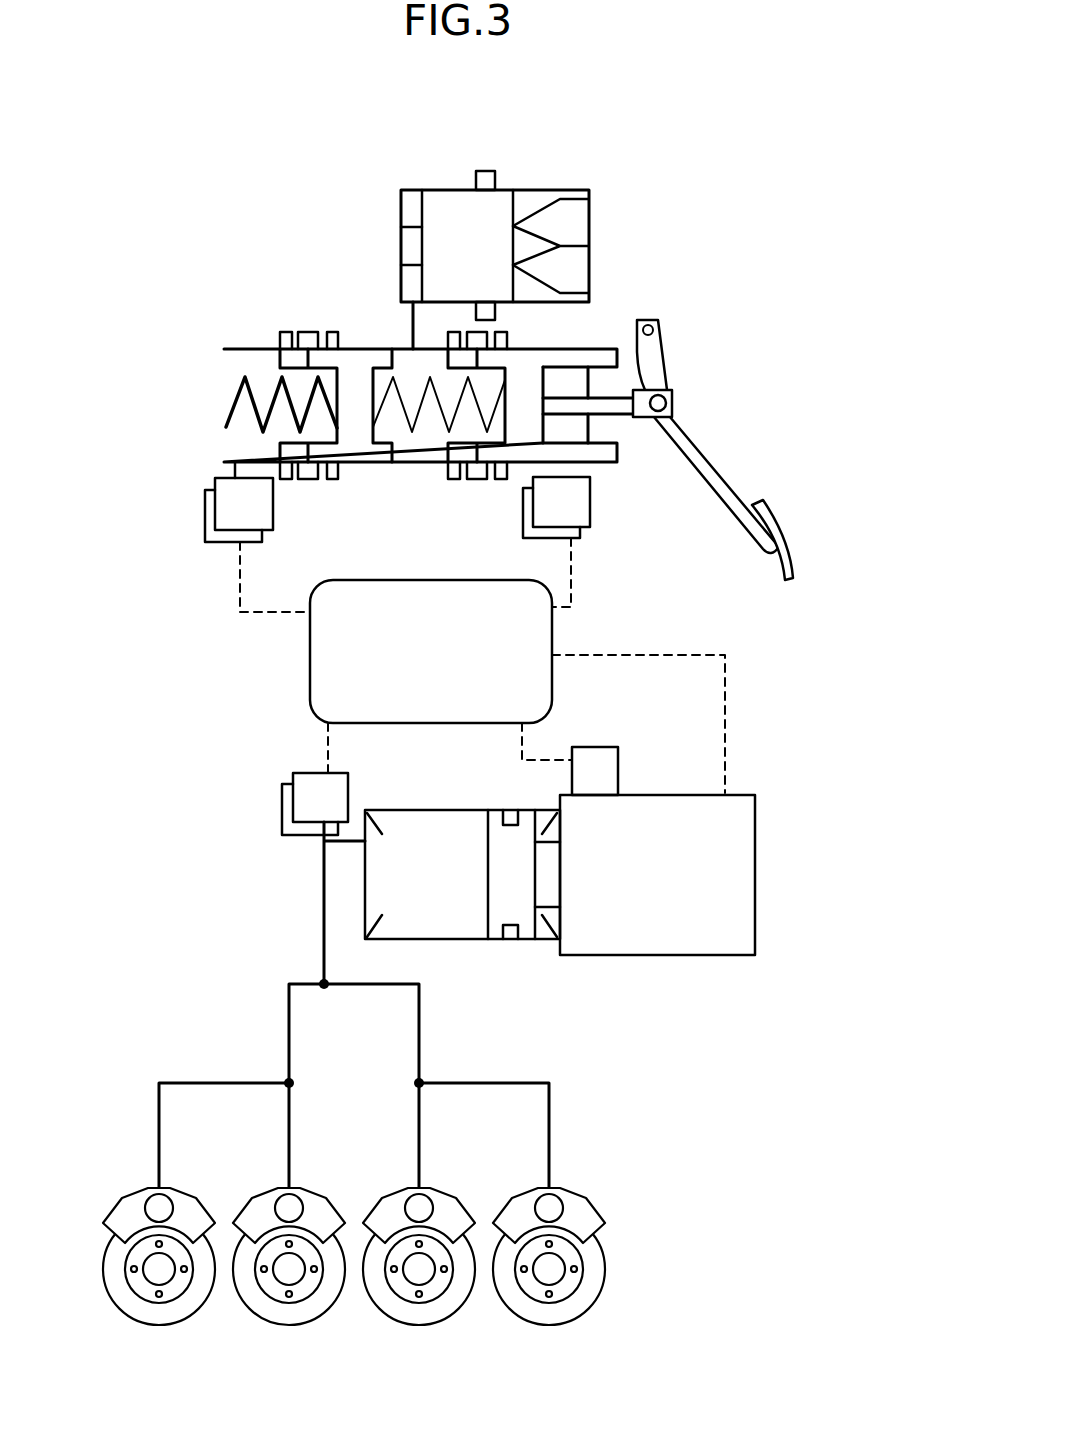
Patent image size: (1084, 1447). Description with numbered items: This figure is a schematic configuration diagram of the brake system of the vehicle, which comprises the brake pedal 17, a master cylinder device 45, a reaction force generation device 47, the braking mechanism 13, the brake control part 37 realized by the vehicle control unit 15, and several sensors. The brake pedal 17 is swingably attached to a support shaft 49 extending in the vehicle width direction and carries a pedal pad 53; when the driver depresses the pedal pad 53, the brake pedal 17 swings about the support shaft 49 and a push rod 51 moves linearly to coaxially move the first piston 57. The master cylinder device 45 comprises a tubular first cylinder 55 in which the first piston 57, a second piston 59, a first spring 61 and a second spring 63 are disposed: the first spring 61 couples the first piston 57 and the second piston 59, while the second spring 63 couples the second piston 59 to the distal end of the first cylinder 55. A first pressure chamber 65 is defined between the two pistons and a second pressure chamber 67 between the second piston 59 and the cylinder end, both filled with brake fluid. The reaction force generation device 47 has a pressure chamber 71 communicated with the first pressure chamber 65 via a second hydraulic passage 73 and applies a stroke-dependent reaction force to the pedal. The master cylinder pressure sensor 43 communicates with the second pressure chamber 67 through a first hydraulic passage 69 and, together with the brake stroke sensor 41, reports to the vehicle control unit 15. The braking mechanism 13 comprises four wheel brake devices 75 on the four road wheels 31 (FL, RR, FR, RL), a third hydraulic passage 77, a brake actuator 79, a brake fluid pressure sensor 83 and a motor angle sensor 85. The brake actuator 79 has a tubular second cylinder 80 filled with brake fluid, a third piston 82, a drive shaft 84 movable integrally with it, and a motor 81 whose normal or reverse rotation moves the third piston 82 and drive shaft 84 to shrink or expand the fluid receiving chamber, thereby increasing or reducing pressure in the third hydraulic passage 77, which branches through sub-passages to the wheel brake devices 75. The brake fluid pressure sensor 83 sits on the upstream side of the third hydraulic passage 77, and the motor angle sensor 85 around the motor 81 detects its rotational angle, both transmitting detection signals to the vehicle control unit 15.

The braking mechanism 13 is at (803, 796).
The vehicle control unit 15 is at (310, 667).
The brake pedal 17 is at (700, 443).
The road wheels 31 is at (590, 1290).
The brake control part 37 is at (190, 318).
The brake stroke sensor 41 is at (582, 505).
The master cylinder pressure sensor 43 is at (222, 502).
The master cylinder device 45 is at (250, 340).
The reaction force generation device 47 is at (556, 182).
The support shaft 49 is at (652, 328).
The push rod 51 is at (615, 407).
The pedal pad 53 is at (778, 533).
The first cylinder 55 is at (353, 347).
The first piston 57 is at (528, 452).
The second piston 59 is at (352, 458).
The first spring 61 is at (438, 415).
The second spring 63 is at (235, 400).
The first pressure chamber 65 is at (408, 452).
The second pressure chamber 67 is at (242, 437).
The first hydraulic passage 69 is at (232, 465).
The pressure chamber 71 is at (448, 200).
The second hydraulic passage 73 is at (412, 327).
The wheel brake devices 75 is at (575, 1195).
The third hydraulic passage 77 is at (323, 903).
The brake actuator 79 is at (763, 864).
The second cylinder 80 is at (443, 940).
The motor 81 is at (672, 917).
The third piston 82 is at (505, 890).
The brake fluid pressure sensor 83 is at (305, 802).
The drive shaft 84 is at (547, 880).
The motor angle sensor 85 is at (612, 747).